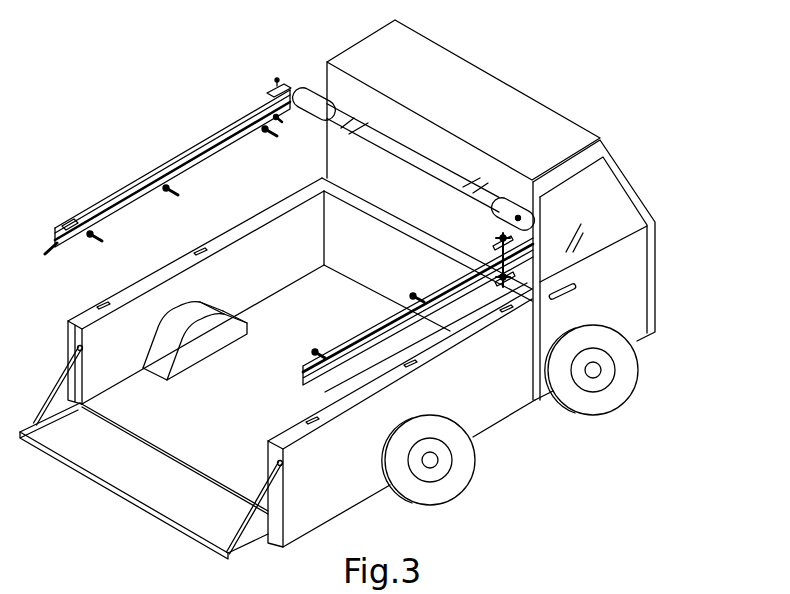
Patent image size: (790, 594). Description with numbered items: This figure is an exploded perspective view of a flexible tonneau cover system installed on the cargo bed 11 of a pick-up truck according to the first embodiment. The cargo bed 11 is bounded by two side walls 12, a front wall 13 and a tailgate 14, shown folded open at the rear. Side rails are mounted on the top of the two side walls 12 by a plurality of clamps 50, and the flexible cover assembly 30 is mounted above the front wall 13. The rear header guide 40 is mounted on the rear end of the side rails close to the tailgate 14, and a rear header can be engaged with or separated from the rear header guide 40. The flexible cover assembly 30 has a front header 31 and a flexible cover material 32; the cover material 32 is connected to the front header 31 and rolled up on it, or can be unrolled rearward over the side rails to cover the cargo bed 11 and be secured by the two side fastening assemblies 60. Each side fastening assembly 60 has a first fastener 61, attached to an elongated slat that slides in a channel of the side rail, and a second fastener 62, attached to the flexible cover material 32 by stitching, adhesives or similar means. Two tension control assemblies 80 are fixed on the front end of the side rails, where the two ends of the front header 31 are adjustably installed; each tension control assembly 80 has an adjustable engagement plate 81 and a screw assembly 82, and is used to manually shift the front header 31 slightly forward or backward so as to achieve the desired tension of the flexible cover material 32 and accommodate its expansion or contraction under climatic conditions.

The cargo bed 11 is at (209, 413).
The side walls 12 is at (230, 284).
The front wall 13 is at (357, 268).
The tailgate 14 is at (126, 487).
The flexible cover assembly 30 is at (388, 118).
The front header 31 is at (520, 220).
The flexible cover material 32 is at (440, 167).
The rear header guide 40 is at (71, 222).
The clamps 50 is at (89, 240).
The side fastening assemblies 60 is at (526, 256).
The first fastener 61 is at (530, 244).
The second fastener 62 is at (533, 192).
The tension control assemblies 80 is at (237, 77).
The adjustable engagement plate 81 is at (272, 91).
The screw assembly 82 is at (277, 79).